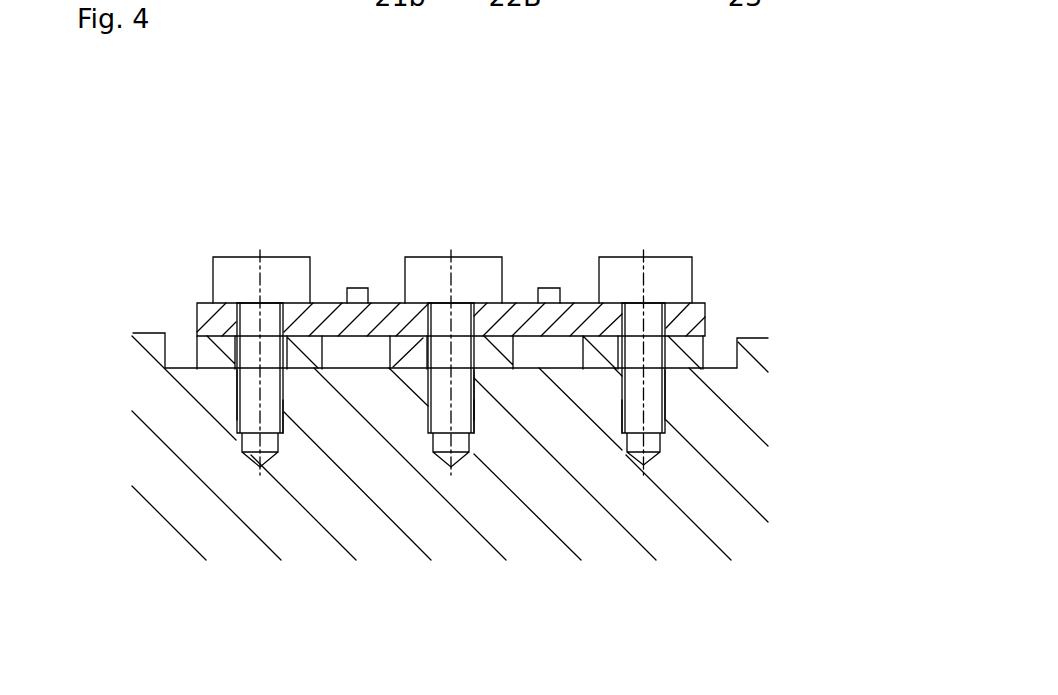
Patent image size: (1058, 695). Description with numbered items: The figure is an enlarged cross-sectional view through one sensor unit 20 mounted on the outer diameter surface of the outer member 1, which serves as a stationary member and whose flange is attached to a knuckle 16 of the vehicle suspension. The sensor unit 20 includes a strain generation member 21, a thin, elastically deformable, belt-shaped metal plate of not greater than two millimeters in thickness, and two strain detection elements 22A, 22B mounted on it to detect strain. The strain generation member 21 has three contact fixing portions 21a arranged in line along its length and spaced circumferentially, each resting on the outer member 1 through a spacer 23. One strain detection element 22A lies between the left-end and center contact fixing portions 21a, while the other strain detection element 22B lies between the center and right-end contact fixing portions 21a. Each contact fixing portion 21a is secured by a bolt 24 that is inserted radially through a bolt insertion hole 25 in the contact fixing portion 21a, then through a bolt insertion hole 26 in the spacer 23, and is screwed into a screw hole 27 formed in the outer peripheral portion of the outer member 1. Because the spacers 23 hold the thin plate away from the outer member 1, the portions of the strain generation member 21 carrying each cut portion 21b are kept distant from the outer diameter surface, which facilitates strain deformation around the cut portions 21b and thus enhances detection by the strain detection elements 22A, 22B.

The outer member 1 is at (782, 410).
The knuckle 16 is at (531, 369).
The sensor unit 20 is at (188, 218).
The strain generation member 21 is at (574, 325).
The contact fixing portion 21a is at (302, 336).
The cut portion 21b is at (400, 6).
The strain detection element 22A is at (358, 288).
The strain detection element 22B is at (558, 288).
The spacer 23 is at (200, 330).
The bolt 24 is at (233, 257).
The bolt insertion hole 25 is at (245, 303).
The bolt insertion hole 26 is at (237, 395).
The screw hole 27 is at (260, 457).